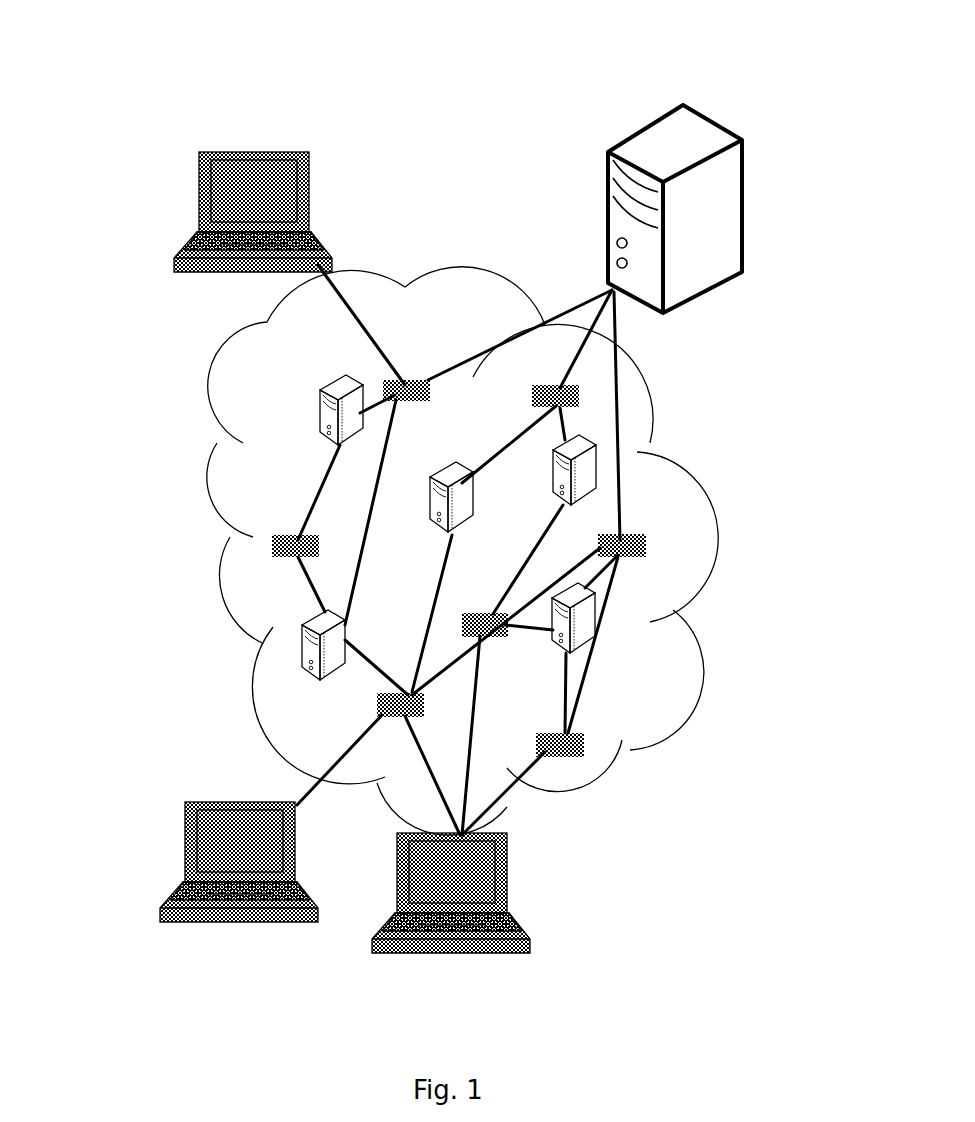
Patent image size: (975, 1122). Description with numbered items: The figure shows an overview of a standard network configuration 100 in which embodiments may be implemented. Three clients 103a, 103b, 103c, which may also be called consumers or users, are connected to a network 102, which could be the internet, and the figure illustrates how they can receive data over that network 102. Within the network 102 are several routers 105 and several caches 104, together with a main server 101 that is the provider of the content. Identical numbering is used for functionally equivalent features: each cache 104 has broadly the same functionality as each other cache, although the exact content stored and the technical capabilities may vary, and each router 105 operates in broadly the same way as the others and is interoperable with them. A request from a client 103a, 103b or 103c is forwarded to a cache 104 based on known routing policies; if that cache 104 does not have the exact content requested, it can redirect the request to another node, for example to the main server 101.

The network configuration 100 is at (116, 93).
The main server 101 is at (682, 148).
The network 102 is at (462, 550).
The client 103a is at (262, 190).
The client 103b is at (238, 848).
The client 103c is at (478, 884).
The cache 104 is at (458, 493).
The router 105 is at (397, 400).